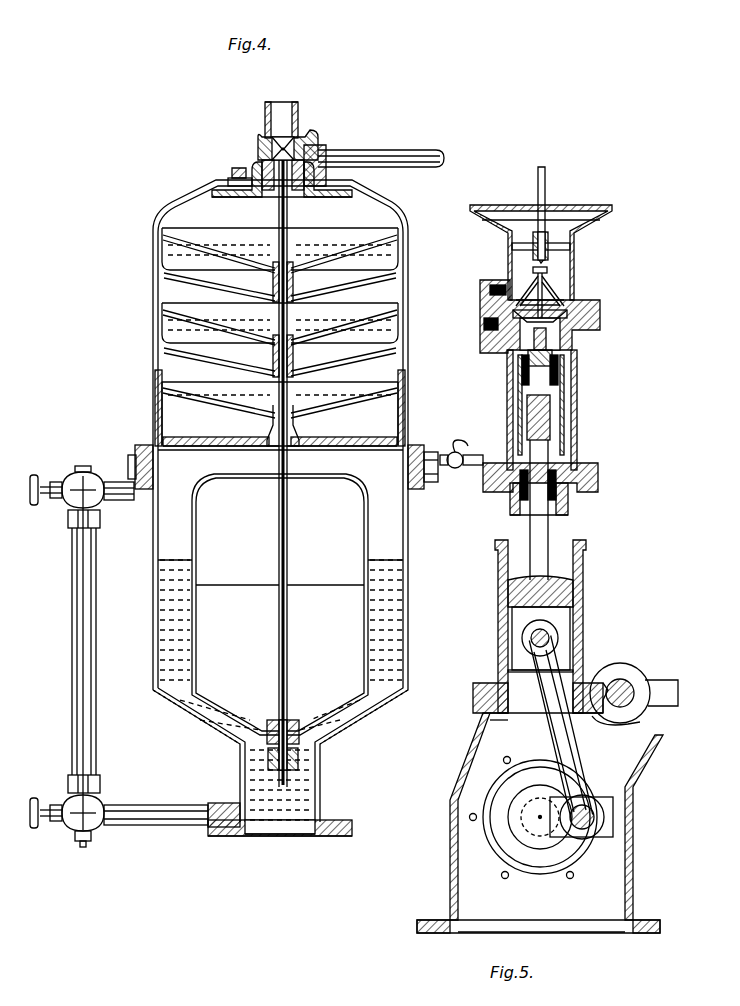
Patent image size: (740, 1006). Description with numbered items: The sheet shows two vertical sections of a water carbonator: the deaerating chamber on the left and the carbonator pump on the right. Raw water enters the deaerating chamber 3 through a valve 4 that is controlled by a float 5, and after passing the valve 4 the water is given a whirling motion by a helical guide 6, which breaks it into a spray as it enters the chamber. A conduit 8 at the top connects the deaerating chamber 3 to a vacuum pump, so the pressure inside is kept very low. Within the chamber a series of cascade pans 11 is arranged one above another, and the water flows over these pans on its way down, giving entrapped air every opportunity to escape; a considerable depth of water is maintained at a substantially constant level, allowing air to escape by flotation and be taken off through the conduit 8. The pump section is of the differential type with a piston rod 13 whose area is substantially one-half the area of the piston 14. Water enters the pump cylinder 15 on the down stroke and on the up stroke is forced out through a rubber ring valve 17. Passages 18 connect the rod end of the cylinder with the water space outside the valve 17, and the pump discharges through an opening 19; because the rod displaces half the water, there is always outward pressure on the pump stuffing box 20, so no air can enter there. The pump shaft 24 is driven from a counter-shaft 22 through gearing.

In FIG. 4, the deaerating chamber 3 is at (408, 354).
In FIG. 4, the valve 4 is at (300, 138).
In FIG. 4, the float 5 is at (372, 545).
In FIG. 4, the helical guide 6 is at (256, 165).
In FIG. 4, the conduit 8 is at (374, 153).
In FIG. 4, the cascade pans 11 is at (405, 236).
In FIG. 5, the piston rod 13 is at (520, 529).
In FIG. 5, the piston 14 is at (578, 366).
In FIG. 5, the pump cylinder 15 is at (585, 345).
In FIG. 5, the rubber ring valve 17 is at (592, 332).
In FIG. 5, the passages 18 is at (578, 414).
In FIG. 5, the opening 19 is at (497, 352).
In FIG. 5, the pump stuffing box 20 is at (510, 500).
In FIG. 5, the counter-shaft 22 is at (628, 726).
In FIG. 5, the pump shaft 24 is at (518, 802).